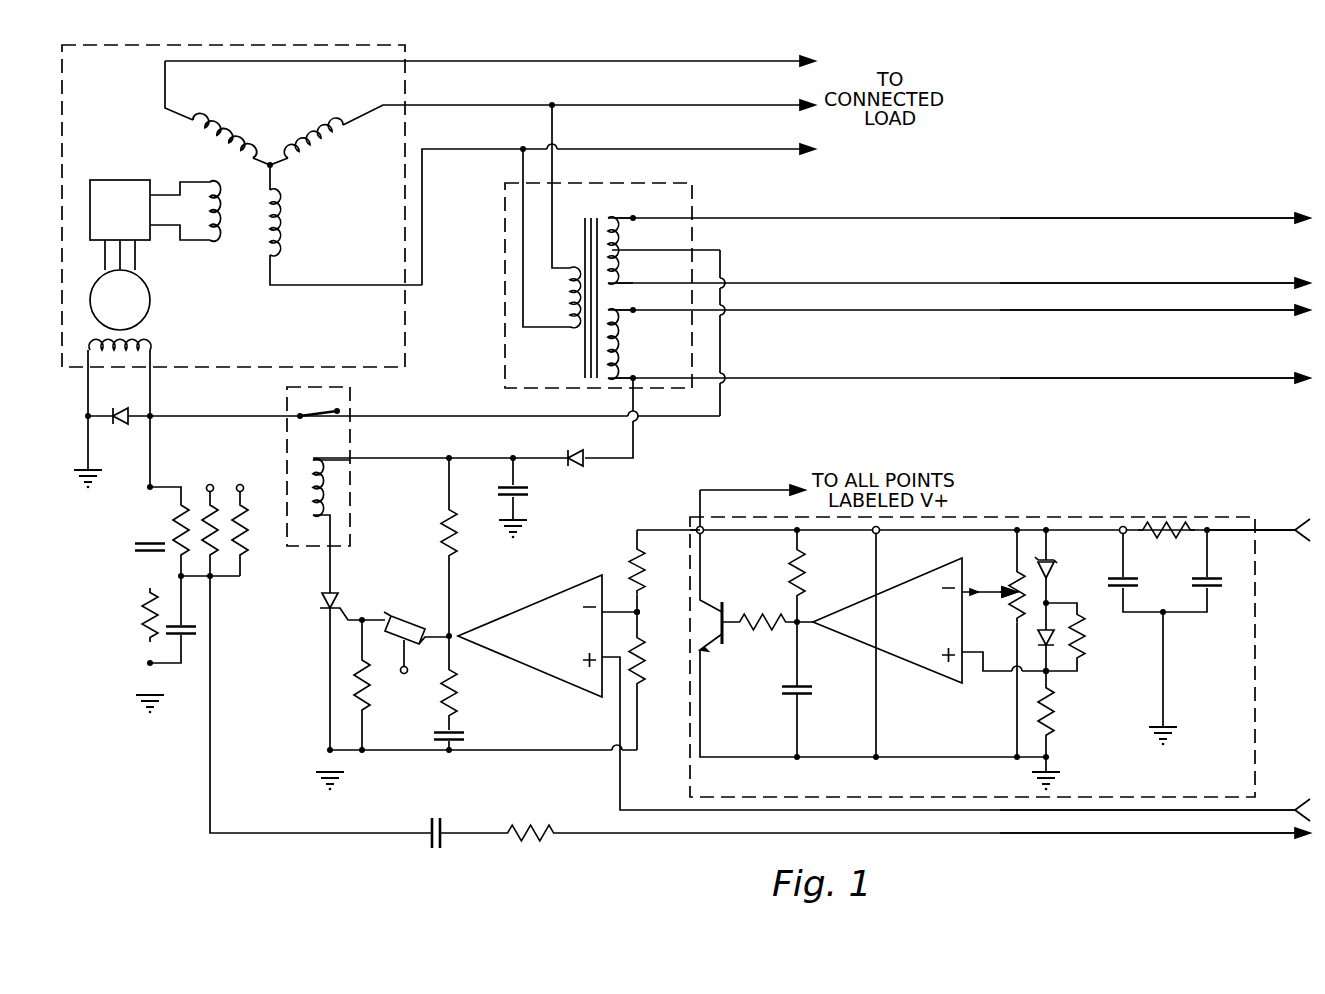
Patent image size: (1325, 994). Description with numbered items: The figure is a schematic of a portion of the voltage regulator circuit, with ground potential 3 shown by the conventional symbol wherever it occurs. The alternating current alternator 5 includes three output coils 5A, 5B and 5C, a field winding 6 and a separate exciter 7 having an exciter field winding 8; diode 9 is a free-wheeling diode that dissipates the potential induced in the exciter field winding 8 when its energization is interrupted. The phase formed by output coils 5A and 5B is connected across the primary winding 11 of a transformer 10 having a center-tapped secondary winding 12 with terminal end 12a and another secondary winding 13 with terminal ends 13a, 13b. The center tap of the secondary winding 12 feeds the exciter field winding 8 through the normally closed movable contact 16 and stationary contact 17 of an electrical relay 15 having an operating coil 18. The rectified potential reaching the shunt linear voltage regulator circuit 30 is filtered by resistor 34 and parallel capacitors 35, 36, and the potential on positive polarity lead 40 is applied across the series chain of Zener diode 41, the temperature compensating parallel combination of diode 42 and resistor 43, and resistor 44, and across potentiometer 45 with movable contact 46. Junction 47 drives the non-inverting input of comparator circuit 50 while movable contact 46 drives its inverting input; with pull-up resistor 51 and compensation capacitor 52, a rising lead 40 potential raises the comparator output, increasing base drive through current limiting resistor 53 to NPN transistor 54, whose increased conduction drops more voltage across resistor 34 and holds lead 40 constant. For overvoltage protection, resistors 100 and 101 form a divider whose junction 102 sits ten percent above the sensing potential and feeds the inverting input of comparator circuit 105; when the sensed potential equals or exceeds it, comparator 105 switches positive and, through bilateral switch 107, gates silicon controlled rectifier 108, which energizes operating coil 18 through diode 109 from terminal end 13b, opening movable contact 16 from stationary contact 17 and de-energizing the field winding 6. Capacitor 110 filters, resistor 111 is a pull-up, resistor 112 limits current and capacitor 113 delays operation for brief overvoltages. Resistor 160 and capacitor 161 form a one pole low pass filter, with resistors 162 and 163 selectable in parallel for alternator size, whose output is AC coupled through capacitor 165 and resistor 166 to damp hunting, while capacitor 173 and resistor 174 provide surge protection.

The point of reference or ground potential 3 is at (82, 472).
The alternating current alternator 5 is at (405, 352).
The output coil 5A is at (322, 142).
The output coil 5B is at (279, 225).
The output coil 5C is at (228, 140).
The field winding 6 is at (220, 218).
The exciter 7 is at (150, 246).
The exciter field winding 8 is at (125, 342).
The diode 9 is at (120, 428).
The transformer 10 is at (690, 202).
The primary winding 11 is at (565, 305).
The center-tapped secondary winding 12 is at (616, 228).
The terminal end of secondary winding 12 12a is at (633, 216).
The secondary winding 13 is at (616, 338).
The terminal end of secondary winding 13 13a is at (634, 310).
The terminal end of secondary winding 13 13b is at (635, 380).
The electrical relay 15 is at (287, 392).
The movable contact 16 is at (320, 416).
The stationary contact 17 is at (338, 414).
The operating coil 18 is at (320, 490).
The shunt linear voltage regulator circuit 30 is at (1076, 515).
The resistor 34 is at (1168, 528).
The capacitor 35 is at (1130, 580).
The capacitor 36 is at (1212, 590).
The positive polarity lead 40 is at (732, 532).
The Zener diode 41 is at (1054, 566).
The diode 42 is at (1050, 630).
The resistor 43 is at (1085, 645).
The resistor 44 is at (1052, 722).
The potentiometer 45 is at (1012, 602).
The movable contact 46 is at (1012, 592).
The junction 47 is at (1050, 674).
The comparator circuit 50 is at (920, 656).
The pull-up resistor 51 is at (805, 568).
The capacitor 52 is at (805, 696).
The current limiting resistor 53 is at (757, 616).
The NPN transistor 54 is at (724, 645).
The resistor 100 is at (634, 562).
The resistor 101 is at (642, 672).
The junction 102 is at (640, 613).
The comparator circuit 105 is at (562, 664).
The bilateral switch 107 is at (398, 616).
The silicon controlled rectifier 108 is at (337, 593).
The diode 109 is at (570, 454).
The capacitor 110 is at (520, 494).
The pullup resistor 111 is at (455, 548).
The current limiting resistor 112 is at (447, 696).
The capacitor 113 is at (456, 730).
The resistor 160 is at (182, 512).
The capacitor 161 is at (189, 640).
The resistor 162 is at (213, 508).
The resistor 163 is at (243, 548).
The capacitor 165 is at (430, 840).
The resistor 166 is at (532, 840).
The capacitor 173 is at (138, 544).
The resistor 174 is at (143, 616).